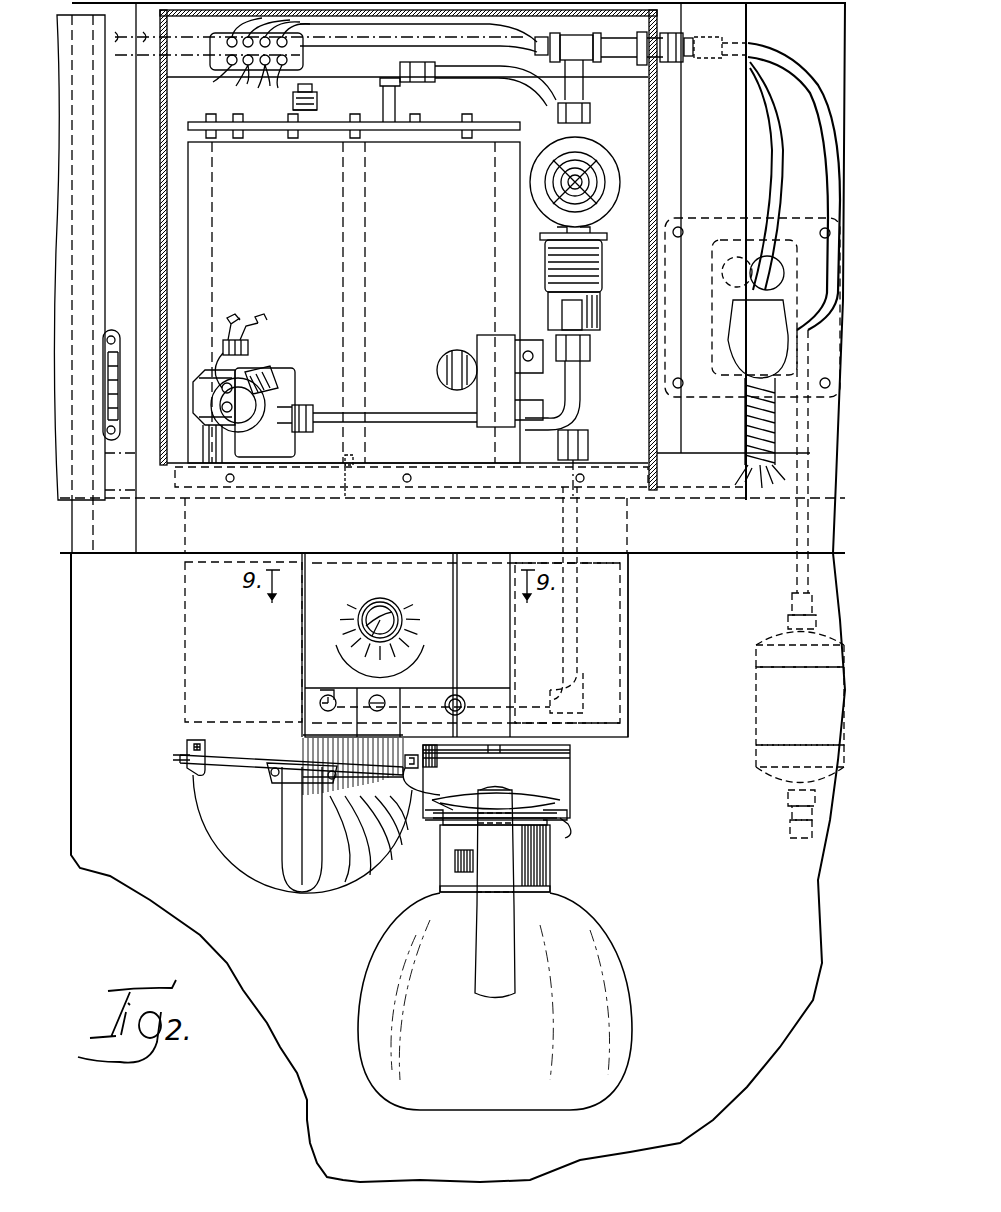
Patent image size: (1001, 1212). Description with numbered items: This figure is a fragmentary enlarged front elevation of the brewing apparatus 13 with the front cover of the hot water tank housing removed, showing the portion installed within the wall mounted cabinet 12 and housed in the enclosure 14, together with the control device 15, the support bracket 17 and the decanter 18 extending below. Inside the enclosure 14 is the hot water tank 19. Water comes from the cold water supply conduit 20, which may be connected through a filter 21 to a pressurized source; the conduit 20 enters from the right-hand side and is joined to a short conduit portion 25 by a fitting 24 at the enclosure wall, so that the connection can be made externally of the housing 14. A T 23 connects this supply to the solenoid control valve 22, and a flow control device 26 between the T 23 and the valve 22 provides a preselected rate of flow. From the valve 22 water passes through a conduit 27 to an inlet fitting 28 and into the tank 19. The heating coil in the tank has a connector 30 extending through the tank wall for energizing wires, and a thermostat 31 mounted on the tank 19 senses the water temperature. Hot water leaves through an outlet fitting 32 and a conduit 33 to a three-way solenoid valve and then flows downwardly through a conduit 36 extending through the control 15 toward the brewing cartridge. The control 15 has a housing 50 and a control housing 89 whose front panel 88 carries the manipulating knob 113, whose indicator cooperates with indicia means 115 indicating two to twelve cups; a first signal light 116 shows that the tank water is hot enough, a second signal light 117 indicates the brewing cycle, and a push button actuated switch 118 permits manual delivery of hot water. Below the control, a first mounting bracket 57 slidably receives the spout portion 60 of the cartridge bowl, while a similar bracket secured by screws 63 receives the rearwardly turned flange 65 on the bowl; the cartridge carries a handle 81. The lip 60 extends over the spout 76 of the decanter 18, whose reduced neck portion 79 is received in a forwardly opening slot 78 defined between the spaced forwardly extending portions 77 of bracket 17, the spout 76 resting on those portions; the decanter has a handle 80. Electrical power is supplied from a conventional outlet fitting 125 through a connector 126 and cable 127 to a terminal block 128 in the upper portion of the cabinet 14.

The wall mounted cabinet 12 is at (120, 548).
The brewing apparatus 13 is at (681, 118).
The enclosure 14 is at (652, 163).
The control device 15 is at (173, 648).
The support bracket 17 is at (568, 798).
The decanter 18 is at (575, 930).
The hot water tank 19 is at (527, 148).
The cold water supply conduit 20 is at (752, 50).
The filter 21 is at (757, 683).
The solenoid control valve 22 is at (608, 260).
The T 23 is at (588, 50).
The fitting 24 is at (668, 35).
The short conduit portion 25 is at (613, 42).
The flow control device 26 is at (602, 152).
The conduit 27 is at (388, 413).
The inlet fitting 28 is at (306, 403).
The connector 30 is at (242, 378).
The thermostat 31 is at (490, 335).
The outlet fitting 32 is at (411, 106).
The conduit 33 is at (465, 80).
The conduit 36 is at (584, 624).
The housing 50 is at (632, 656).
The first mounting bracket 57 is at (415, 815).
The spout portion 60 is at (430, 783).
The screws 63 is at (185, 775).
The rearwardly turned flange 65 is at (173, 757).
The spout 76 is at (535, 800).
The forwardly extending portions 77 is at (572, 830).
The forwardly opening slot 78 is at (548, 808).
The reduced neck portion 79 is at (455, 838).
The handle 80 is at (518, 958).
The handle 81 is at (290, 862).
The front panel 88 is at (432, 572).
The control housing 89 is at (510, 644).
The manipulating knob 113 is at (406, 605).
The indicia means 115 is at (436, 645).
The first signal light 116 is at (326, 694).
The second signal light 117 is at (380, 694).
The push button actuated switch 118 is at (460, 694).
The outlet fitting 125 is at (705, 218).
The connector 126 is at (750, 350).
The cable 127 is at (768, 192).
The terminal block 128 is at (305, 66).